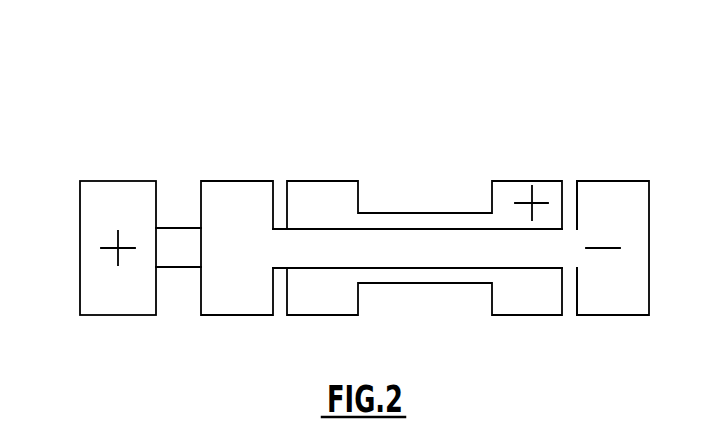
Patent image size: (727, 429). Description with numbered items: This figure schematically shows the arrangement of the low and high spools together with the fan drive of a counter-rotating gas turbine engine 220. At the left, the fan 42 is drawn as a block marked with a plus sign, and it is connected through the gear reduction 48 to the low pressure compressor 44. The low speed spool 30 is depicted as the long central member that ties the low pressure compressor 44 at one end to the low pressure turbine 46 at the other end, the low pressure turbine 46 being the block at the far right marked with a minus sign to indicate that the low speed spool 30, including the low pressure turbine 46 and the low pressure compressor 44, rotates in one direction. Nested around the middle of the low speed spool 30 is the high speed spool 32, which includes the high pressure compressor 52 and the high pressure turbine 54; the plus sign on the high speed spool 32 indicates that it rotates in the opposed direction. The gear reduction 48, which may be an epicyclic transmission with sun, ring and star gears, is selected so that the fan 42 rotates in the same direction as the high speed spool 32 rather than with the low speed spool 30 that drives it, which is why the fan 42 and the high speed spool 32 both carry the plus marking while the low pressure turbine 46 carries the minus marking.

The engine 220 is at (133, 72).
The fan 42 is at (117, 197).
The gear reduction 48 is at (183, 245).
The low pressure compressor 44 is at (242, 197).
The high speed spool 32 is at (405, 217).
The low speed spool 30 is at (320, 245).
The high pressure compressor 52 is at (327, 297).
The high pressure turbine 54 is at (535, 298).
The low pressure turbine 46 is at (611, 196).